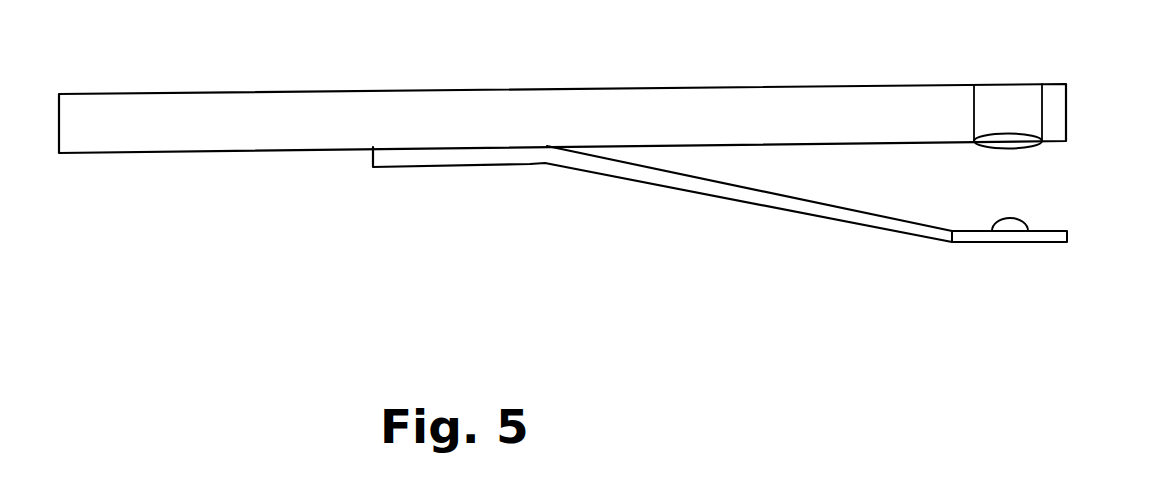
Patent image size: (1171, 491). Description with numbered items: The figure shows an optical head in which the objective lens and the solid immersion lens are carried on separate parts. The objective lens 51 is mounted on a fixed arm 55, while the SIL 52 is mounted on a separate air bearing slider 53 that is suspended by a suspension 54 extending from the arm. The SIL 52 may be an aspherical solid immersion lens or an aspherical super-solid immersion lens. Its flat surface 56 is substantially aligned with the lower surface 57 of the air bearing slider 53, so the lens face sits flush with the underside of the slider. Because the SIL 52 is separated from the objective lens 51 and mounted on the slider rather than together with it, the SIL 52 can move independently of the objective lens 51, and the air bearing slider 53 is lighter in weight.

The fixed arm 55 is at (448, 110).
The objective lens 51 is at (1028, 142).
The suspension 54 is at (718, 188).
The SIL 52 is at (1018, 230).
The air bearing slider 53 is at (1053, 242).
The flat surface 56 is at (1022, 245).
The lower surface 57 is at (960, 245).